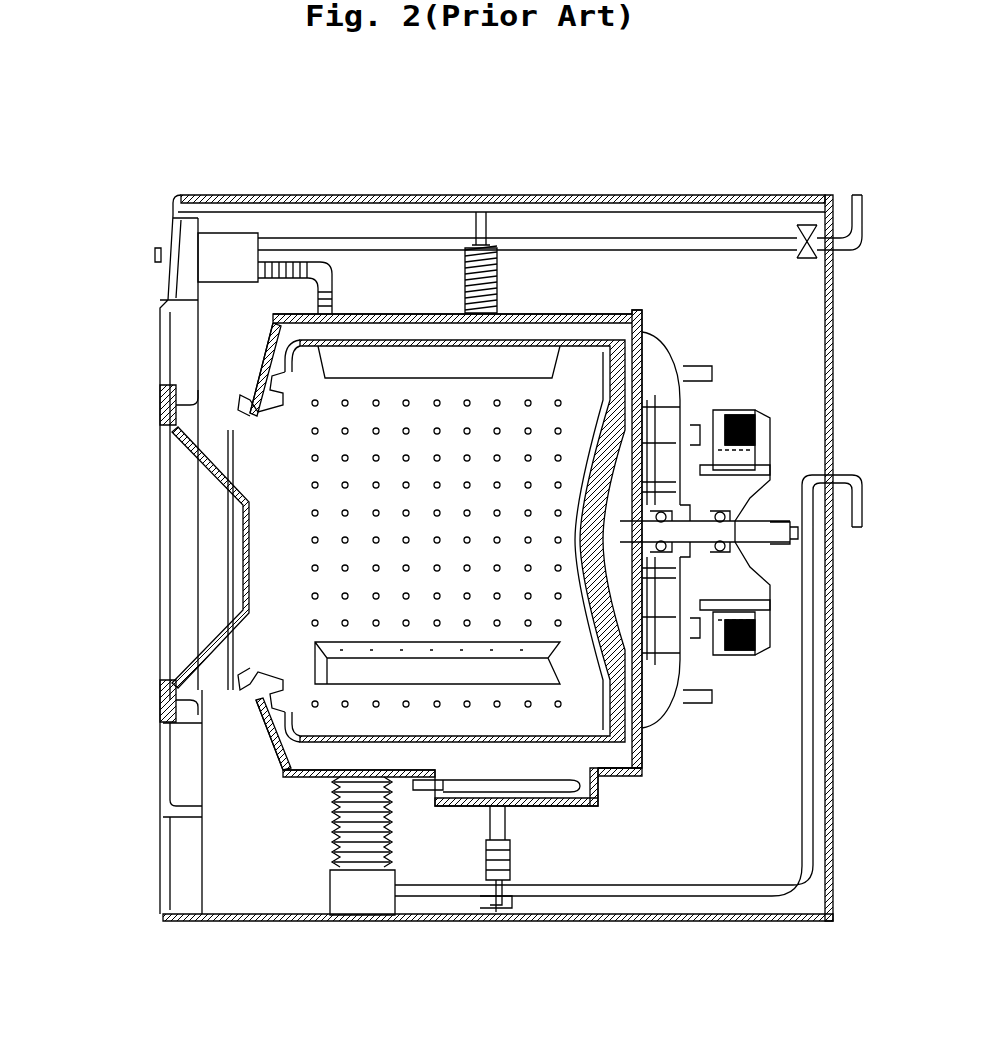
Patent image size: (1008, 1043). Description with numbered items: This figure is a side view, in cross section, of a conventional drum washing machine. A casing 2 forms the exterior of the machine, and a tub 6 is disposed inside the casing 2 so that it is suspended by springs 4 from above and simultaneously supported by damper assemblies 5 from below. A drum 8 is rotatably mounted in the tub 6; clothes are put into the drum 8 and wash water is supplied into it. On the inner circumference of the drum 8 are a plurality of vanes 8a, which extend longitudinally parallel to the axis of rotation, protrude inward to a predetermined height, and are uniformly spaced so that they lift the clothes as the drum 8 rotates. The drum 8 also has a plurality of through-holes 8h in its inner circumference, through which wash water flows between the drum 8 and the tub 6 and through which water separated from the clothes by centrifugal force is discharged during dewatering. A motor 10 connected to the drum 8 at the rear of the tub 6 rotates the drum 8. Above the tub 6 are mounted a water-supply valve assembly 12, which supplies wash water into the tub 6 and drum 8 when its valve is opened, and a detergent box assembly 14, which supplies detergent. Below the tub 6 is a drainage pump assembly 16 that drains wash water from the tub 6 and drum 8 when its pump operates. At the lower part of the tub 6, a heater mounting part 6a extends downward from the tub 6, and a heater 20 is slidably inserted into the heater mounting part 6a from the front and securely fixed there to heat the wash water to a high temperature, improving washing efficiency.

The casing 2 is at (831, 325).
The springs 4 is at (498, 268).
The damper assemblies 5 is at (520, 852).
The tub 6 is at (268, 343).
The heater mounting part 6a is at (597, 790).
The drum 8 is at (252, 386).
The vanes 8a is at (315, 666).
The through-holes 8h is at (312, 486).
The motor 10 is at (786, 438).
The water-supply valve assembly 12 is at (788, 228).
The detergent box assembly 14 is at (245, 231).
The drainage pump assembly 16 is at (326, 880).
The heater 20 is at (556, 790).